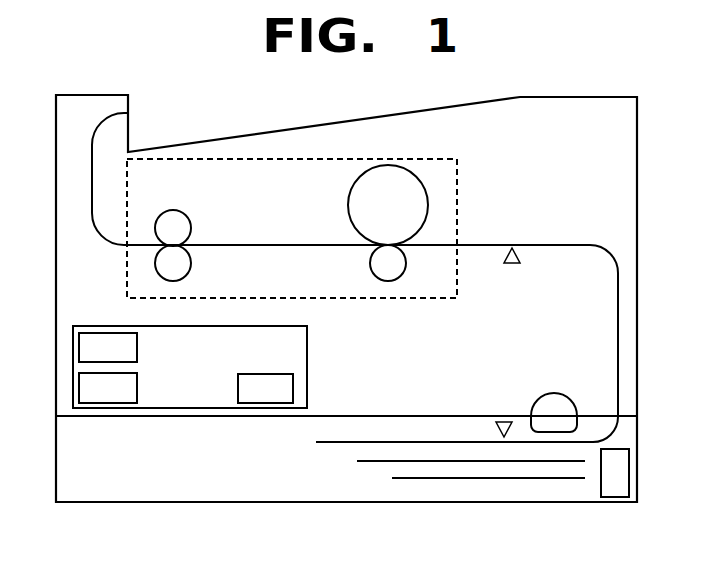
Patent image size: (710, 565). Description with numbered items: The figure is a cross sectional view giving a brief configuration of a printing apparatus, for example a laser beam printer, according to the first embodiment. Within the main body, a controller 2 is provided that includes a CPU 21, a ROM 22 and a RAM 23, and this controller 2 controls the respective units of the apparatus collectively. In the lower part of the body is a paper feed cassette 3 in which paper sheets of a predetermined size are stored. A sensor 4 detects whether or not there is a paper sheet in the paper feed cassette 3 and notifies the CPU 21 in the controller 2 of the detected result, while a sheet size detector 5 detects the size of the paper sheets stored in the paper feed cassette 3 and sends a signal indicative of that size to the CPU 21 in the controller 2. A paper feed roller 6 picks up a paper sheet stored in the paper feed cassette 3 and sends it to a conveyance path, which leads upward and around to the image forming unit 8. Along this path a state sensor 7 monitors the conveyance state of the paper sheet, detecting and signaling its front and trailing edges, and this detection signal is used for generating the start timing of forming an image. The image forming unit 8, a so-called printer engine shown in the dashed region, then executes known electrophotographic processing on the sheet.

The controller 2 is at (181, 384).
The paper feed cassette 3 is at (204, 502).
The sensor 4 is at (504, 422).
The sheet size detector 5 is at (629, 473).
The paper feed roller 6 is at (553, 394).
The state sensor 7 is at (512, 263).
The image forming unit 8 is at (458, 200).
The CPU 21 is at (79, 350).
The ROM 22 is at (79, 388).
The RAM 23 is at (238, 403).